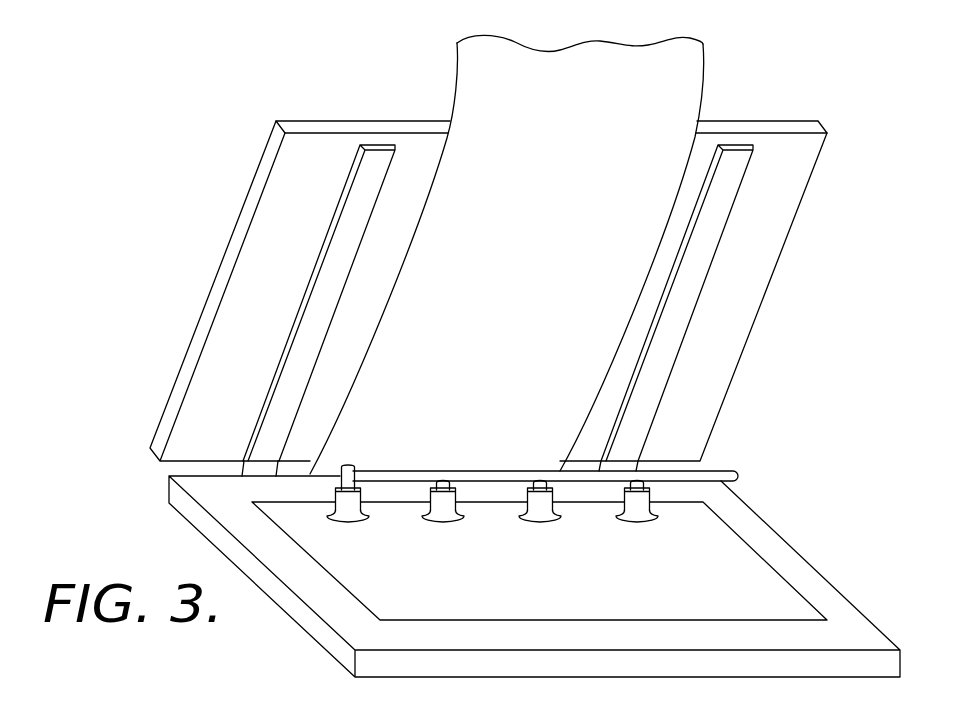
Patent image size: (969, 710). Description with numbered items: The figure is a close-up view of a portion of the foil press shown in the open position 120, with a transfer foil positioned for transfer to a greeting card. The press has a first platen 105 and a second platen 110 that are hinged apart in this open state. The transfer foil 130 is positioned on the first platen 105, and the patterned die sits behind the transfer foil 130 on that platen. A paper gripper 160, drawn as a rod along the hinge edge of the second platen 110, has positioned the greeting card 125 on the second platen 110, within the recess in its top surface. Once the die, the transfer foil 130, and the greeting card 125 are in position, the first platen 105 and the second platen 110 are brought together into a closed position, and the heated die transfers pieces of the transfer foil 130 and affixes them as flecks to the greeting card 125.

The first platen 105 is at (250, 277).
The second platen 110 is at (355, 625).
The open position 120 is at (464, 285).
The greeting card 125 is at (763, 578).
The transfer foil 130 is at (682, 75).
The paper gripper 160 is at (730, 472).